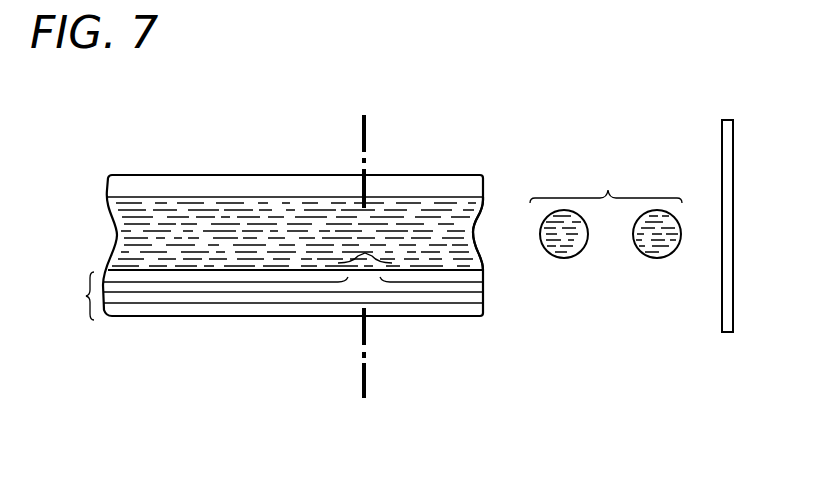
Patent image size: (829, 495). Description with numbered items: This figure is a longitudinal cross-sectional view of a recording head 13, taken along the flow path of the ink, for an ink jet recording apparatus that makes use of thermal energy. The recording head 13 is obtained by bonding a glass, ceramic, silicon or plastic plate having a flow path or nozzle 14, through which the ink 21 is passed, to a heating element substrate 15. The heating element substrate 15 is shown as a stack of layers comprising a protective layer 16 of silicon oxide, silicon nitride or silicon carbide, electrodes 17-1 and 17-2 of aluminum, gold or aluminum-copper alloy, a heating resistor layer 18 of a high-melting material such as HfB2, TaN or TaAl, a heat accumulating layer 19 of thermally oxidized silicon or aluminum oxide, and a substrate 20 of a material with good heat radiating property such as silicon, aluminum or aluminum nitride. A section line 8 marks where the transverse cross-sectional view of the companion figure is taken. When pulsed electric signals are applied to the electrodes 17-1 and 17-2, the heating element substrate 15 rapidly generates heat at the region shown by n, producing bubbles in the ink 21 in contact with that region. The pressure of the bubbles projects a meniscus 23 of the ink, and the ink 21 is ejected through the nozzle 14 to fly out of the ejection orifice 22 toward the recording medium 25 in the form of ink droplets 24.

The recording head 13 is at (187, 175).
The flow path (nozzle) 14 is at (237, 198).
The ink 21 is at (138, 200).
The heat generating region n is at (365, 253).
The heating element substrate 15 is at (269, 295).
The protective layer 16 is at (140, 273).
The electrode 17-1 is at (187, 283).
The heating resistor layer 18 is at (229, 291).
The heat accumulating layer 19 is at (281, 302).
The substrate 20 is at (338, 310).
The electrode 17-2 is at (445, 283).
The section line 8- 8 is at (364, 256).
The ejection orifice 22 is at (492, 257).
The meniscus 23 is at (481, 220).
The ink droplets 24 is at (606, 211).
The recording medium 25 is at (722, 150).